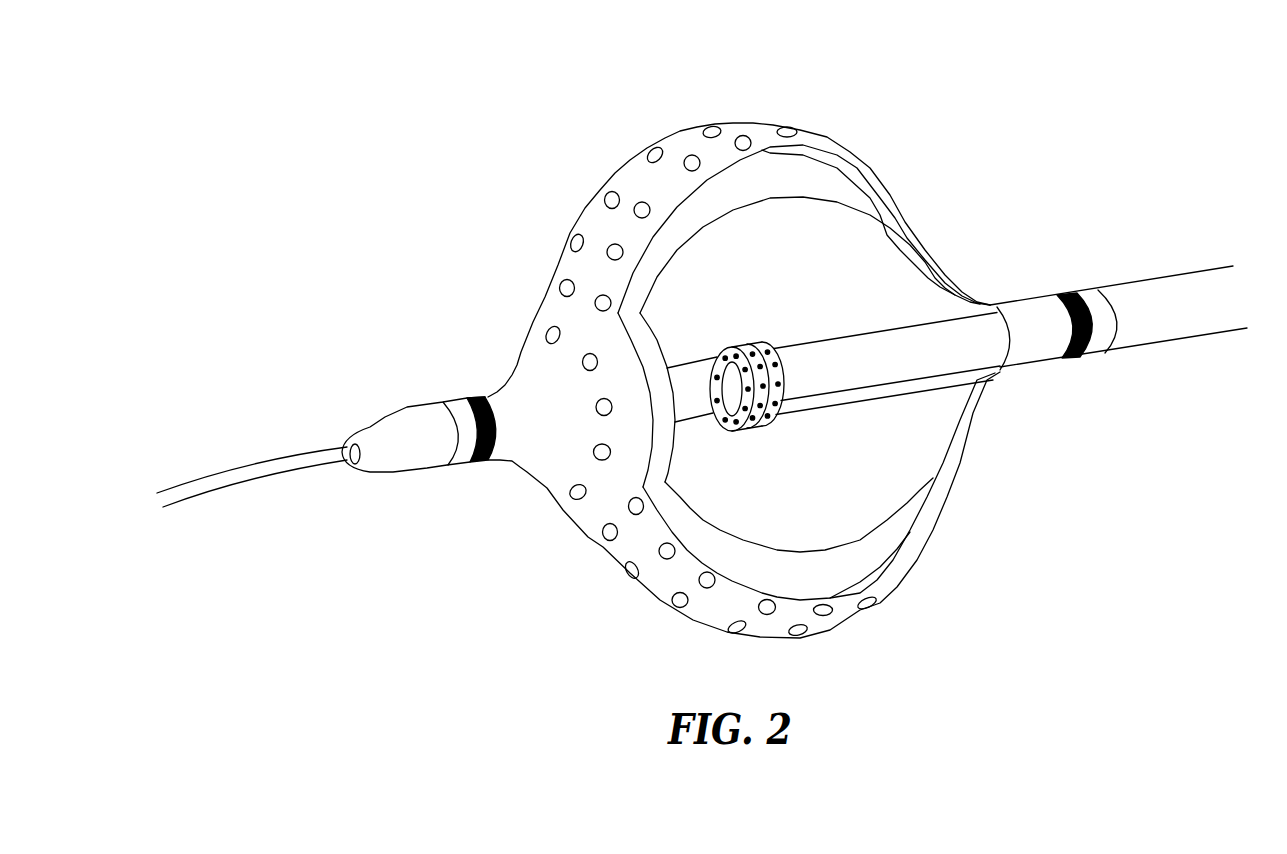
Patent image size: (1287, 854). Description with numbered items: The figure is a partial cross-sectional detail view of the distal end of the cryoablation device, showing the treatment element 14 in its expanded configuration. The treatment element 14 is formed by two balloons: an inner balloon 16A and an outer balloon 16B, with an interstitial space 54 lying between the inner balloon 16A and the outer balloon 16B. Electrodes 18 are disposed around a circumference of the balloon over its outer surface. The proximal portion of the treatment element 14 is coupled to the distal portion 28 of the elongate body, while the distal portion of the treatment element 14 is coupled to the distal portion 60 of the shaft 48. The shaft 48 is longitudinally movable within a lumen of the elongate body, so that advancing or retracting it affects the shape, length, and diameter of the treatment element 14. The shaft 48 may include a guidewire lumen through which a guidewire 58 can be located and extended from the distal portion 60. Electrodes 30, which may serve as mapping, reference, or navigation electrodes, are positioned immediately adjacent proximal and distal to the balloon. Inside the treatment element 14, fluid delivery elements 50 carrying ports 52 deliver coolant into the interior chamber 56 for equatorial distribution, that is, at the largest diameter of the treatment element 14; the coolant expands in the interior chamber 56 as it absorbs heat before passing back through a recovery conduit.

The treatment element 14 is at (566, 174).
The inner balloon 16A is at (818, 181).
The outer balloon 16B is at (682, 137).
The electrodes 18 is at (608, 535).
The distal portion of the elongate body 28 is at (1183, 272).
The electrodes 30 is at (1064, 360).
The shaft 48 is at (690, 402).
The fluid delivery elements 50 is at (728, 340).
The ports 52 is at (775, 367).
The interstitial space 54 is at (900, 236).
The interior chamber 56 is at (883, 468).
The guidewire 58 is at (240, 466).
The distal portion of the shaft 60 is at (405, 418).